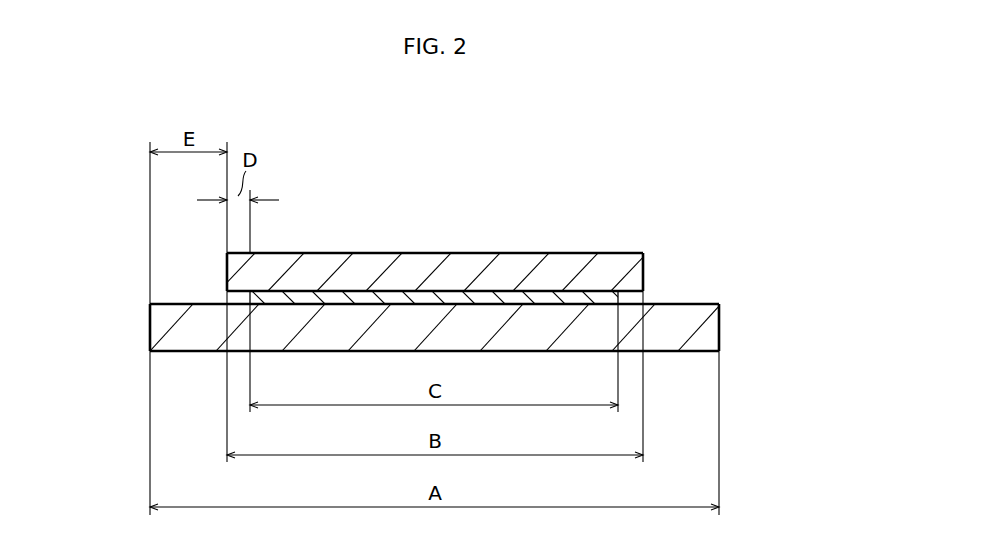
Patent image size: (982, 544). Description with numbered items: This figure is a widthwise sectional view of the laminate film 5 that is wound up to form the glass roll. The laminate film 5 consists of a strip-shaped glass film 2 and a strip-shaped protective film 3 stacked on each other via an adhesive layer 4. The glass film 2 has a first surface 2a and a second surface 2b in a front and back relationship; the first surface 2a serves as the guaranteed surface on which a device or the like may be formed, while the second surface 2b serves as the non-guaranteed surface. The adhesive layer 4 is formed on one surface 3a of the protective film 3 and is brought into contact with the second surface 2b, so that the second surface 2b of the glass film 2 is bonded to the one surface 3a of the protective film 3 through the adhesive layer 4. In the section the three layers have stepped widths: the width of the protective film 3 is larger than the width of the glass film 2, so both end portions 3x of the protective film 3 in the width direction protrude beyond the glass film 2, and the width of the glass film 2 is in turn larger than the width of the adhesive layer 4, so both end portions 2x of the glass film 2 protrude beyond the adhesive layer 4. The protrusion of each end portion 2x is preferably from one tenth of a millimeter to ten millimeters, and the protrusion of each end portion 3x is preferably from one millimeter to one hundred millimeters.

The glass film 2 is at (440, 250).
The first surface 2a is at (424, 252).
The second surface 2b is at (398, 297).
The end portions of the glass film 2x is at (237, 271).
The protective film 3 is at (467, 305).
The one surface of the protective film 3a is at (483, 303).
The end portions of the protective film 3x is at (185, 336).
The adhesive layer 4 is at (563, 297).
The laminate film 5 is at (523, 203).